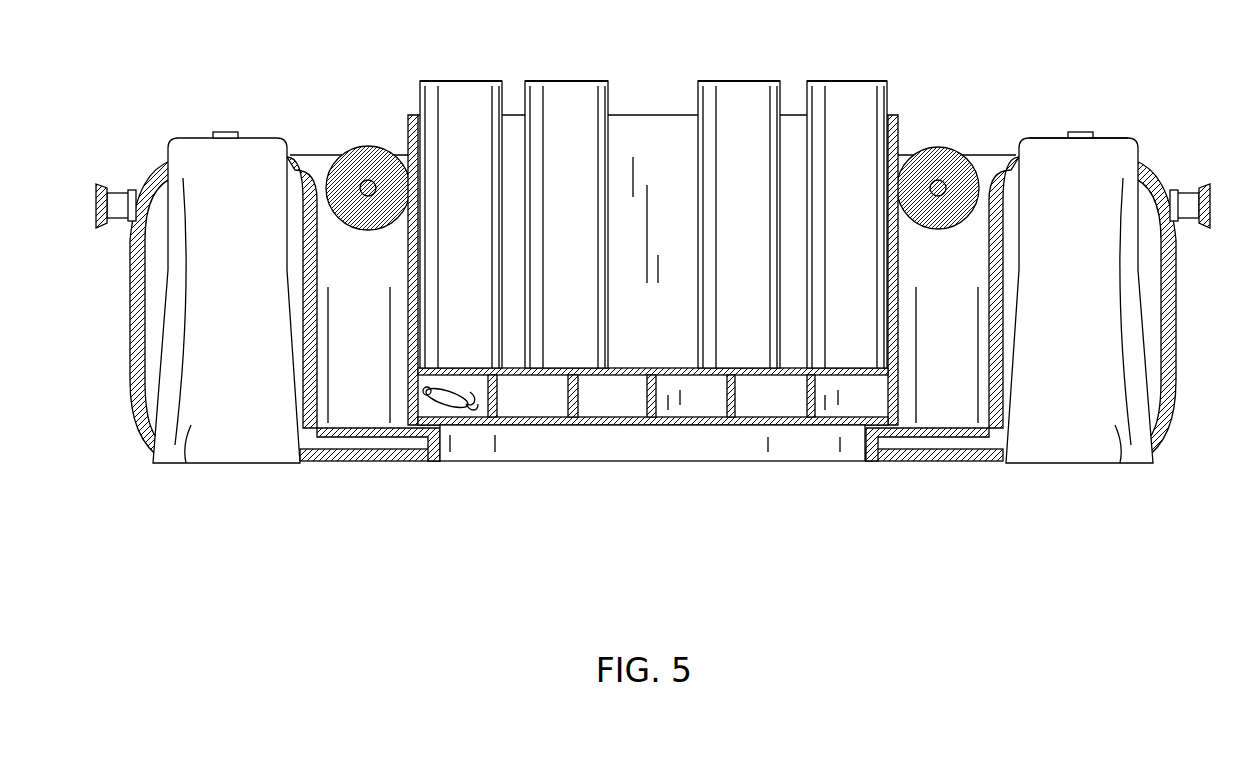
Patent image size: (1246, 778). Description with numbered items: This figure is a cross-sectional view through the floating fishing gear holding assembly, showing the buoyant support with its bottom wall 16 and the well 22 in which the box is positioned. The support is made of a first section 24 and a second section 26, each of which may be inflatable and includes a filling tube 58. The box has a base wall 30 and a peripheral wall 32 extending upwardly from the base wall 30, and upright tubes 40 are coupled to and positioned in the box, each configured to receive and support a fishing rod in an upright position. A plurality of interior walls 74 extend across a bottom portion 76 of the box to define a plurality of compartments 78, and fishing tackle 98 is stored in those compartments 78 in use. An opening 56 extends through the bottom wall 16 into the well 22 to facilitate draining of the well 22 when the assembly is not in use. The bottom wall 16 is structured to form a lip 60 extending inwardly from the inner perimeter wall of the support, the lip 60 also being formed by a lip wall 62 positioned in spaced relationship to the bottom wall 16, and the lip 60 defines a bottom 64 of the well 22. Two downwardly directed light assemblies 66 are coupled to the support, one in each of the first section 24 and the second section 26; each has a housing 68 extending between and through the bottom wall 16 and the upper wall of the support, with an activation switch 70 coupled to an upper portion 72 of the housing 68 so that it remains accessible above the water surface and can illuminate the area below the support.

The bottom wall 16 is at (938, 462).
The well 22 is at (354, 297).
The first section 24 is at (1152, 300).
The second section 26 is at (150, 330).
The base wall 30 is at (783, 421).
The peripheral wall 32 is at (897, 130).
The upright tube 40 is at (468, 98).
The opening 56 is at (511, 450).
The filling tube 58 is at (123, 195).
The lip 60 is at (864, 470).
The lip wall 62 is at (918, 447).
The bottom 64 is at (346, 421).
The downwardly directed light assembly 66 is at (250, 130).
The housing 68 is at (193, 463).
The activation switch 70 is at (228, 131).
The upper portion 72 is at (1131, 135).
The interior walls 74 is at (588, 407).
The bottom portion 76 is at (541, 409).
The compartments 78 is at (611, 406).
The fishing tackle 98 is at (447, 405).